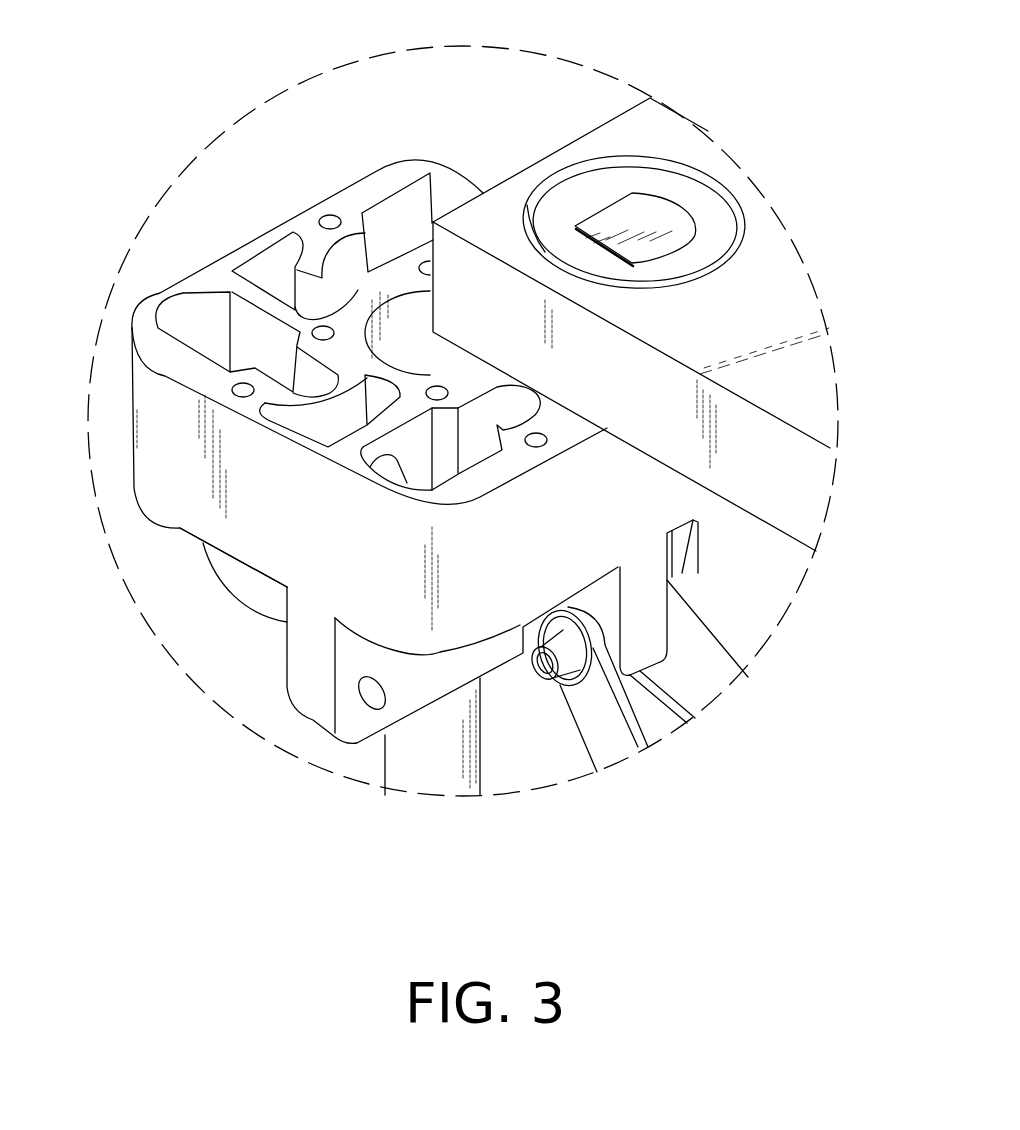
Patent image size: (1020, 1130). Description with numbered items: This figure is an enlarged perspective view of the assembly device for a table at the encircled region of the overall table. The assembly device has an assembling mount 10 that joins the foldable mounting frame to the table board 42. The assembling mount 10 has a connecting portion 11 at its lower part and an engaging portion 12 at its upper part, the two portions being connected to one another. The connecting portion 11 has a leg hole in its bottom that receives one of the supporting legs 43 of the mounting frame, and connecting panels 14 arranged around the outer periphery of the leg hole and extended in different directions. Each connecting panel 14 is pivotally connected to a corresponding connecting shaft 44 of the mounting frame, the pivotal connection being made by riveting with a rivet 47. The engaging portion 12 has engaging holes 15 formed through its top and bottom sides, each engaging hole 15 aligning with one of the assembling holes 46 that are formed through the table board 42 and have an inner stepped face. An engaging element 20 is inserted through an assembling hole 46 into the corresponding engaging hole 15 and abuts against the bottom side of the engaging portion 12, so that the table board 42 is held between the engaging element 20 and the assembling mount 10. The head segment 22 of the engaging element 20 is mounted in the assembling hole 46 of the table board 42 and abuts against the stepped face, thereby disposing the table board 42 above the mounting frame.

The assembling mount 10 is at (222, 175).
The connecting portion 11 is at (258, 662).
The engaging portion 12 is at (225, 235).
The connecting panel 14 is at (648, 622).
The engaging hole 15 is at (385, 212).
The engaging element 20 is at (673, 172).
The head segment 22 is at (722, 218).
The table board 42 is at (608, 118).
The supporting leg 43 is at (410, 773).
The connecting shaft 44 is at (712, 660).
The assembling hole 46 is at (532, 205).
The rivet 47 is at (565, 650).